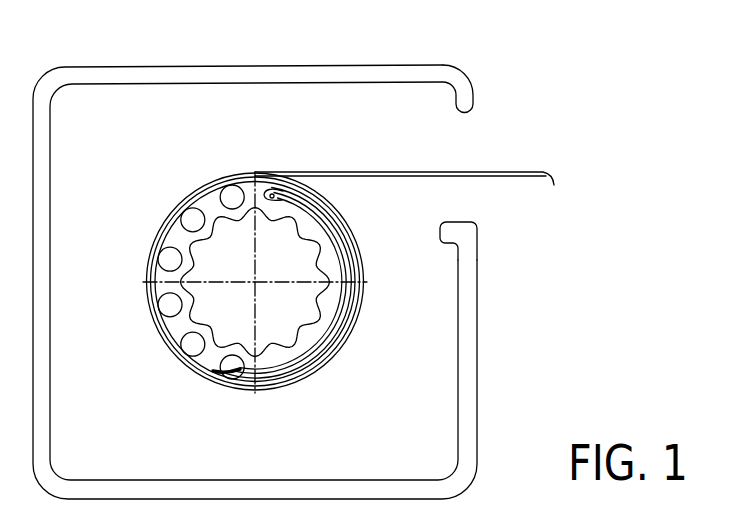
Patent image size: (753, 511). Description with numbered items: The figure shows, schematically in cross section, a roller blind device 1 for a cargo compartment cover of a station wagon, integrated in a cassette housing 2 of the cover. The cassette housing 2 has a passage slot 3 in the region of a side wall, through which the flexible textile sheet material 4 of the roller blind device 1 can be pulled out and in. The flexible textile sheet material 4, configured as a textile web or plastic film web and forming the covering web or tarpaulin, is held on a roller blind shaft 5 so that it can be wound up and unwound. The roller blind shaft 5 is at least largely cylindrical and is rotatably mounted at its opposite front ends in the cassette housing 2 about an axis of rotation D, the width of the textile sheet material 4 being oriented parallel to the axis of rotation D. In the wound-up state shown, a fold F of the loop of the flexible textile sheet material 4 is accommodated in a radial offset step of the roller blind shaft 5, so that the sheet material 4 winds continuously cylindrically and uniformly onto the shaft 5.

The roller blind device 1 is at (561, 120).
The cassette housing 2 is at (337, 77).
The passage slot 3 is at (463, 222).
The flexible textile sheet material 4 is at (374, 171).
The roller blind shaft 5 is at (215, 357).
The fold F is at (277, 188).
The axis of rotation D is at (258, 281).